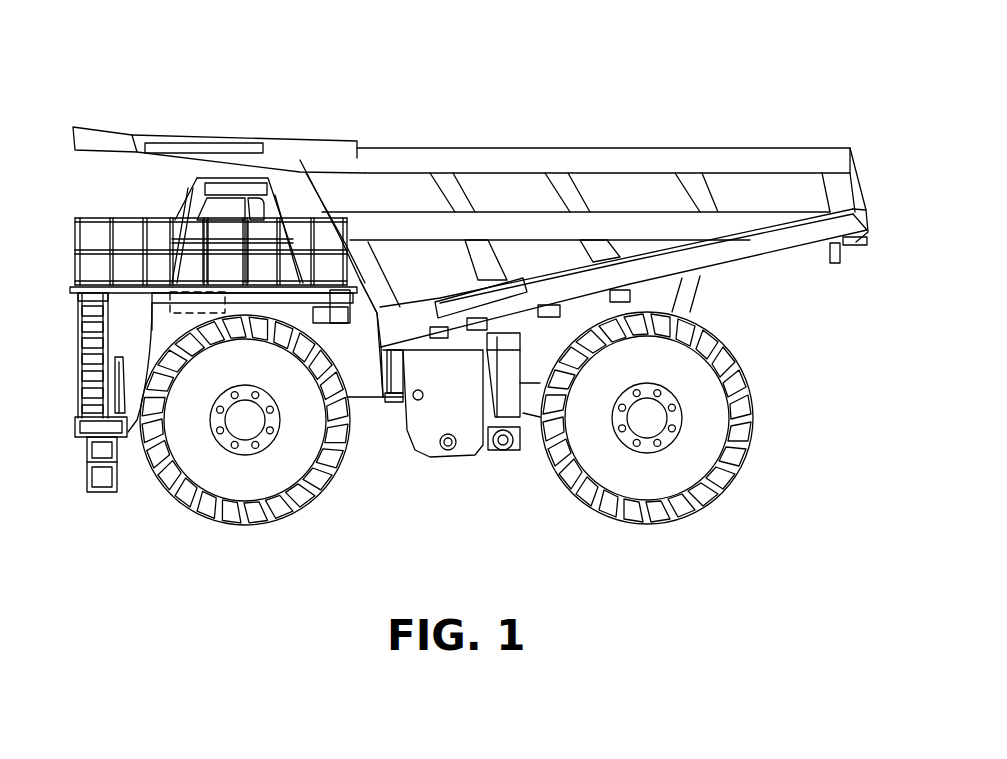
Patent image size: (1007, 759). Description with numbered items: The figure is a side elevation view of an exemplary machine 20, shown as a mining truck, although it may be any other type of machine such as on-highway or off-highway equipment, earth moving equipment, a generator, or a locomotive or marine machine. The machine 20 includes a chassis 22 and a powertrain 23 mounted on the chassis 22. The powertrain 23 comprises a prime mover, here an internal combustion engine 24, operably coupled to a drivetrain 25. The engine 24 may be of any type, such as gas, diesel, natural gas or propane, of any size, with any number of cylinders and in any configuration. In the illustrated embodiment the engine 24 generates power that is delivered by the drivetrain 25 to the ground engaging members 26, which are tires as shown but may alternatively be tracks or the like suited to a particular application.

The machine 20 is at (470, 91).
The chassis 22 is at (380, 400).
The powertrain 23 is at (148, 340).
The internal combustion engine 24 is at (170, 304).
The drivetrain 25 is at (367, 357).
The ground engaging members 26 is at (202, 440).